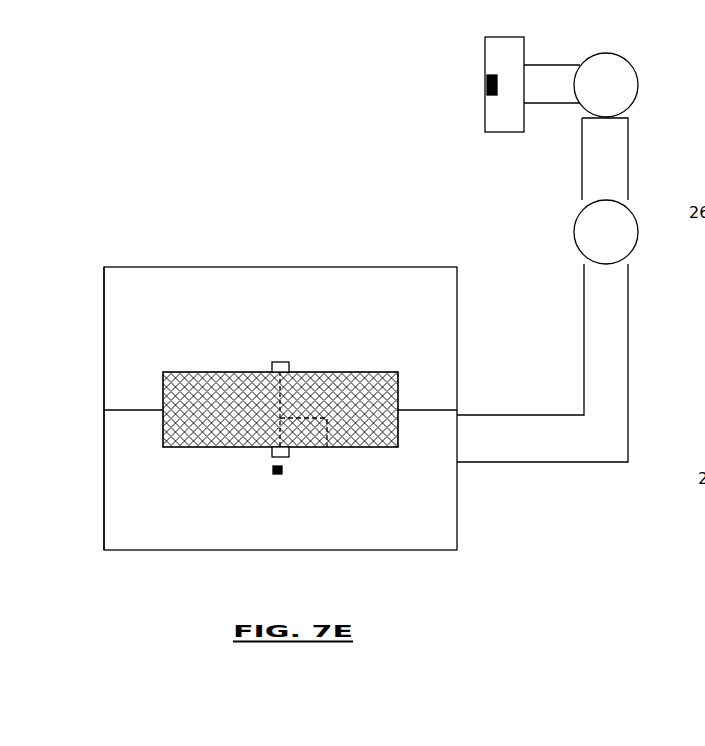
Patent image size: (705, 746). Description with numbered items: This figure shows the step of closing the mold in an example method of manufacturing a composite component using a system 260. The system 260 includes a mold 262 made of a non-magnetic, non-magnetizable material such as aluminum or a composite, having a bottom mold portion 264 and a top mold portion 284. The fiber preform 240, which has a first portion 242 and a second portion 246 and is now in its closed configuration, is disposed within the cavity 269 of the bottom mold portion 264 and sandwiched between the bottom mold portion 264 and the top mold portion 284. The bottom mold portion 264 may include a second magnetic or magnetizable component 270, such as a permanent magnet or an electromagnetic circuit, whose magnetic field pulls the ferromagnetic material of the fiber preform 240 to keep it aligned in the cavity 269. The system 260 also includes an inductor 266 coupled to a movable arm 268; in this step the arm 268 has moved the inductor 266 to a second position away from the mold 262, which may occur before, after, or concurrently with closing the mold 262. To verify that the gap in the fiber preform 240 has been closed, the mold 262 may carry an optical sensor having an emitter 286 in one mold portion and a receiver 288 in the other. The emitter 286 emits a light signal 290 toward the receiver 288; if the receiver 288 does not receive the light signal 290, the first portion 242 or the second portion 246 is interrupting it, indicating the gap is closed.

The system 260 is at (122, 132).
The mold 262 is at (128, 268).
The bottom mold portion 264 is at (100, 508).
The inductor 266 is at (486, 87).
The movable arm 268 is at (610, 174).
The cavity 269 is at (390, 412).
The fiber preform 240 is at (155, 362).
The first portion 242 is at (351, 385).
The second portion 246 is at (182, 400).
The second magnetic or magnetizable component 270 is at (272, 453).
The top mold portion 284 is at (100, 285).
The emitter 286 is at (283, 472).
The receiver 288 is at (272, 366).
The light signal 290 is at (327, 447).